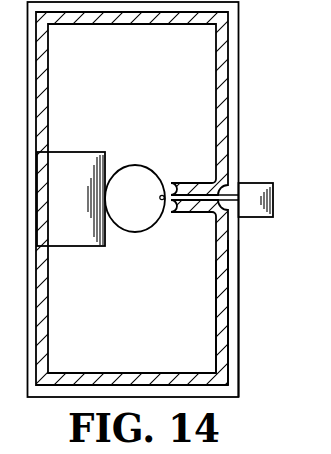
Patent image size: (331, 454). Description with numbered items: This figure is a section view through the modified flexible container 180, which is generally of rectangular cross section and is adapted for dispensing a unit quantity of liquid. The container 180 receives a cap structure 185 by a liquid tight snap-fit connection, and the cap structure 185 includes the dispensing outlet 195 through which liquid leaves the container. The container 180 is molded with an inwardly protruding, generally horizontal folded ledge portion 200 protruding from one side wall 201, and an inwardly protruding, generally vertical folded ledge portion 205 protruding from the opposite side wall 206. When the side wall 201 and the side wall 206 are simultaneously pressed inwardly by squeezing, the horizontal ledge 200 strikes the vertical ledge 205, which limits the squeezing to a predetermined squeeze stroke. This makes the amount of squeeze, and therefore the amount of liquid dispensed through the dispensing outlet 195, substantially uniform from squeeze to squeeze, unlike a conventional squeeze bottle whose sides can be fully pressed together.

The flexible container 180 is at (228, 293).
The cap structure 185 is at (240, 331).
The dispensing outlet 195 is at (272, 217).
The horizontal folded ledge portion 200 is at (83, 246).
The side wall 201 is at (46, 318).
The vertical folded ledge portion 205 is at (178, 212).
The side wall 206 is at (223, 307).